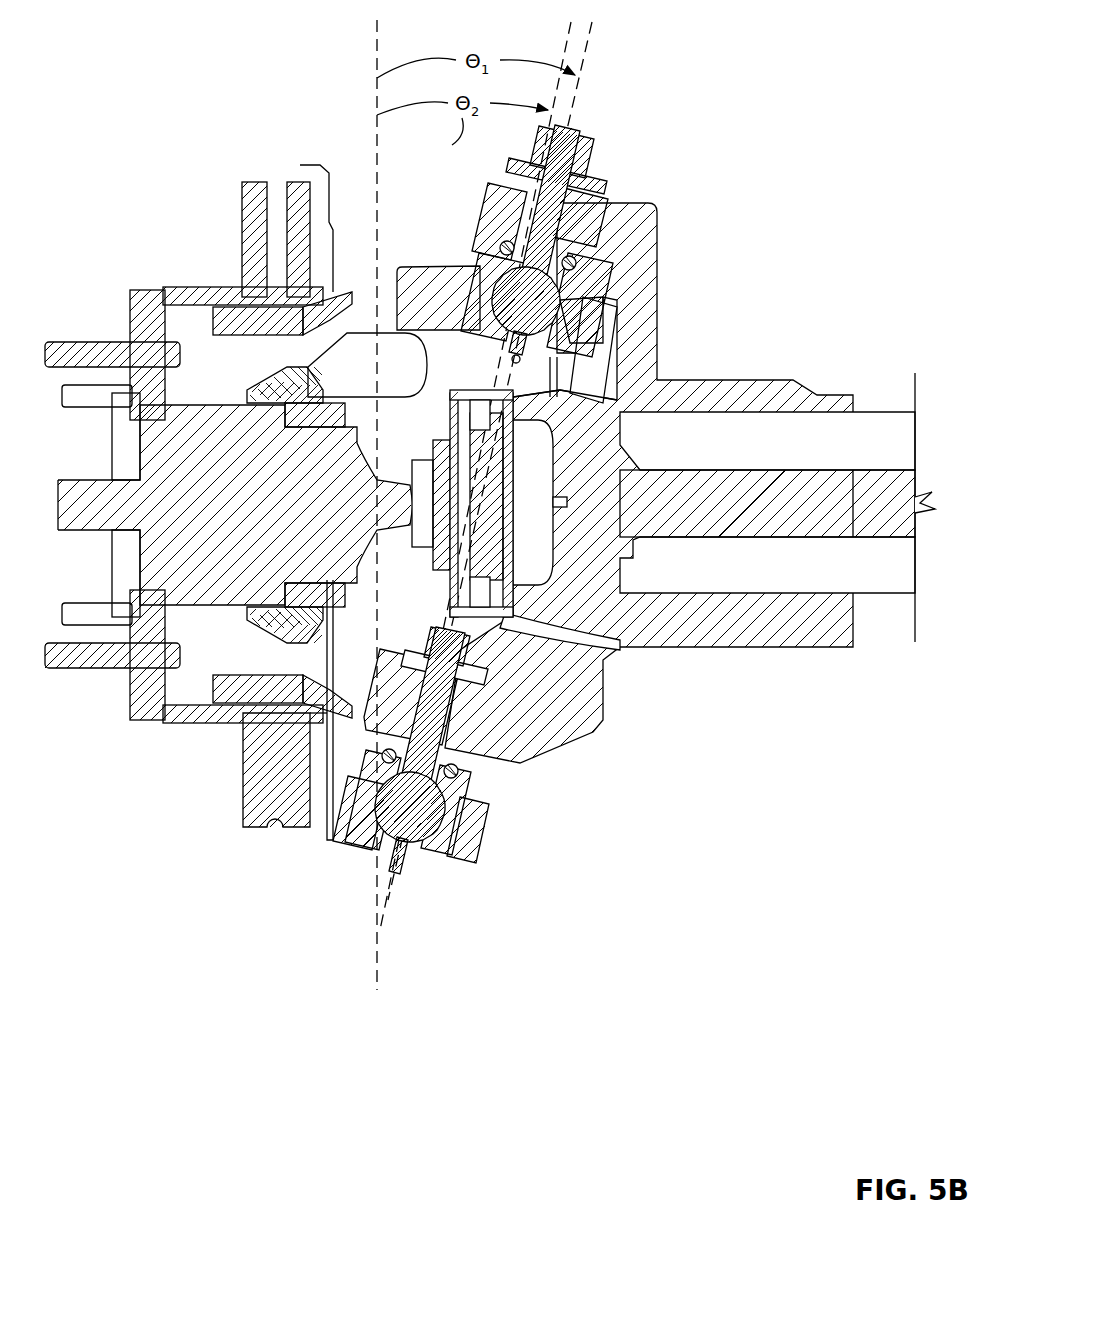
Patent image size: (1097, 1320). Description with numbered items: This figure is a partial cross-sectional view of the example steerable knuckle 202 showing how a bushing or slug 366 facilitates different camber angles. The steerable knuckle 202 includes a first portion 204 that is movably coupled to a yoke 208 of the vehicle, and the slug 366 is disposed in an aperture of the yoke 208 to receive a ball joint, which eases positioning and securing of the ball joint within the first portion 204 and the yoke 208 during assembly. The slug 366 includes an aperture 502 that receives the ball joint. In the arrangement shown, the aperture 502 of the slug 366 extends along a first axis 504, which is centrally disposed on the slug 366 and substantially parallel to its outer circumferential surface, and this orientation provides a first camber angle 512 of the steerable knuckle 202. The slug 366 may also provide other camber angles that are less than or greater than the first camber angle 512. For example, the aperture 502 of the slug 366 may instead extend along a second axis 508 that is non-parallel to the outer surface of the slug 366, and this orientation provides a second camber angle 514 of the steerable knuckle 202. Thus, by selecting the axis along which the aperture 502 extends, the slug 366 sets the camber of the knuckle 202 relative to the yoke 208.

The steerable knuckle 202 is at (186, 50).
The first portion 204 is at (477, 840).
The yoke 208 is at (605, 733).
The slug 366 is at (603, 177).
The aperture 502 is at (590, 220).
The first axis 504 is at (585, 58).
The second axis 508 is at (565, 47).
The first camber angle 512 is at (466, 50).
The second camber angle 514 is at (465, 135).